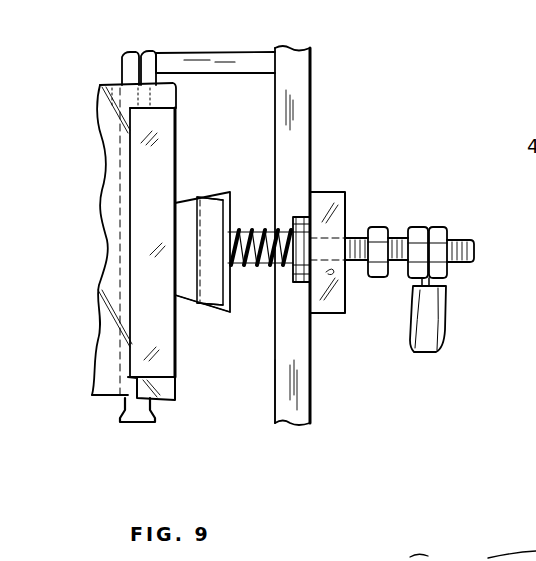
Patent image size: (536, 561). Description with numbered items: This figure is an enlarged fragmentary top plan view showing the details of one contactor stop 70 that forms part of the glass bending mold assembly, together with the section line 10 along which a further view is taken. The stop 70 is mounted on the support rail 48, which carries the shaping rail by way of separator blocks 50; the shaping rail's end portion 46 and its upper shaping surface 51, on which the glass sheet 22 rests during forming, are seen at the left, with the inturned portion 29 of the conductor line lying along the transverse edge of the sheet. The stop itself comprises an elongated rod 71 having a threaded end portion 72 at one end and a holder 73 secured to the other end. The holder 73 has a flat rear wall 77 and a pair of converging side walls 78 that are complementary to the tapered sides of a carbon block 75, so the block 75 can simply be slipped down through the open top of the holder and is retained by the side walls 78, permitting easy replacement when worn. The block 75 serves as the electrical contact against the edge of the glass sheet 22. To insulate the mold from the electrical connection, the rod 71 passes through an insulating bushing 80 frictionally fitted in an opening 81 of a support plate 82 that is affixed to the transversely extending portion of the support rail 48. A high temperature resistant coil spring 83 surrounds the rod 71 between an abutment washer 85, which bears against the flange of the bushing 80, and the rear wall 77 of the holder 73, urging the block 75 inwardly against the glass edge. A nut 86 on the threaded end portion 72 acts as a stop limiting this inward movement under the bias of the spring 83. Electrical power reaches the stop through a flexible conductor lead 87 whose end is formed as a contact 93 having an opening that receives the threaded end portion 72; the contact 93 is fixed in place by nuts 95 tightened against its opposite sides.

The section line 10- 10 is at (77, 202).
The glass sheet 22 is at (100, 90).
The inturned portion 29 is at (170, 125).
The end portion 46 is at (157, 420).
The support rail 48 is at (303, 70).
The separator blocks 50 is at (190, 60).
The upper shaping surface 51 is at (127, 407).
The contactor stop 70 is at (242, 367).
The elongated rod 71 is at (250, 226).
The threaded end portion 72 is at (399, 236).
The holder 73 is at (219, 312).
The carbon block 75 is at (187, 213).
The flat rear wall 77 is at (232, 203).
The converging side walls 78 is at (212, 195).
The bushing 80 is at (297, 283).
The opening 81 is at (320, 313).
The support plate 82 is at (335, 193).
The coil spring 83 is at (252, 270).
The abutment washer 85 is at (298, 217).
The nut 86 is at (381, 227).
The flexible conductor lead 87 is at (415, 352).
The contact 93 is at (416, 282).
The nuts 95 is at (422, 228).